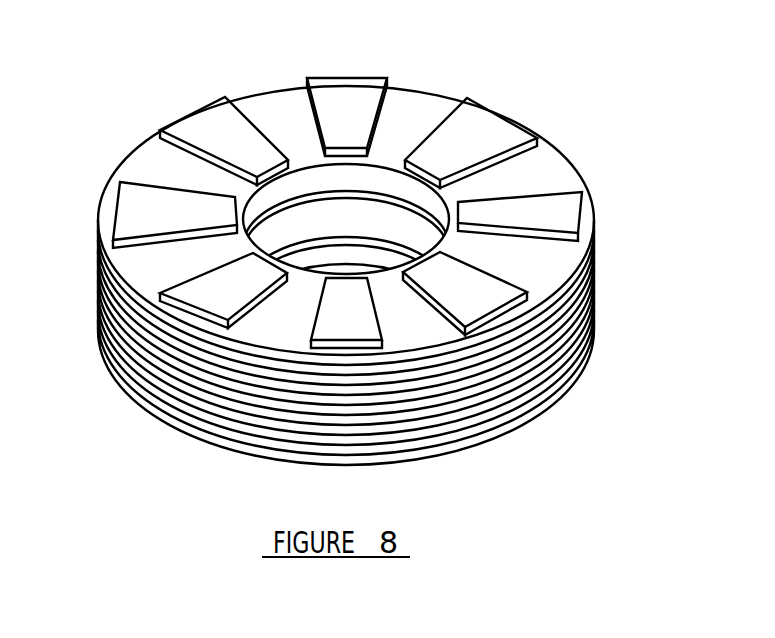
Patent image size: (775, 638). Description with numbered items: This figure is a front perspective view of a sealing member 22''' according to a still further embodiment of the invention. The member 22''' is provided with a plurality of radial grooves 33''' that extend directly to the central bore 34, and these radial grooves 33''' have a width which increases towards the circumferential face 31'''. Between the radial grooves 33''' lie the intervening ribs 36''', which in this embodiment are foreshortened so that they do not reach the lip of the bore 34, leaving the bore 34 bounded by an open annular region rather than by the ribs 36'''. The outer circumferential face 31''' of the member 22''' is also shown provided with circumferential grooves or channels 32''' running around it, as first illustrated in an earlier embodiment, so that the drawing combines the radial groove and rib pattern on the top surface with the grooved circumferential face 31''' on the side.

The member 22''' is at (403, 220).
The circumferential face 31''' is at (405, 318).
The circumferential grooves or channels 32''' is at (405, 378).
The radial grooves 33''' is at (402, 95).
The bore 34 is at (425, 202).
The ribs 36''' is at (495, 125).